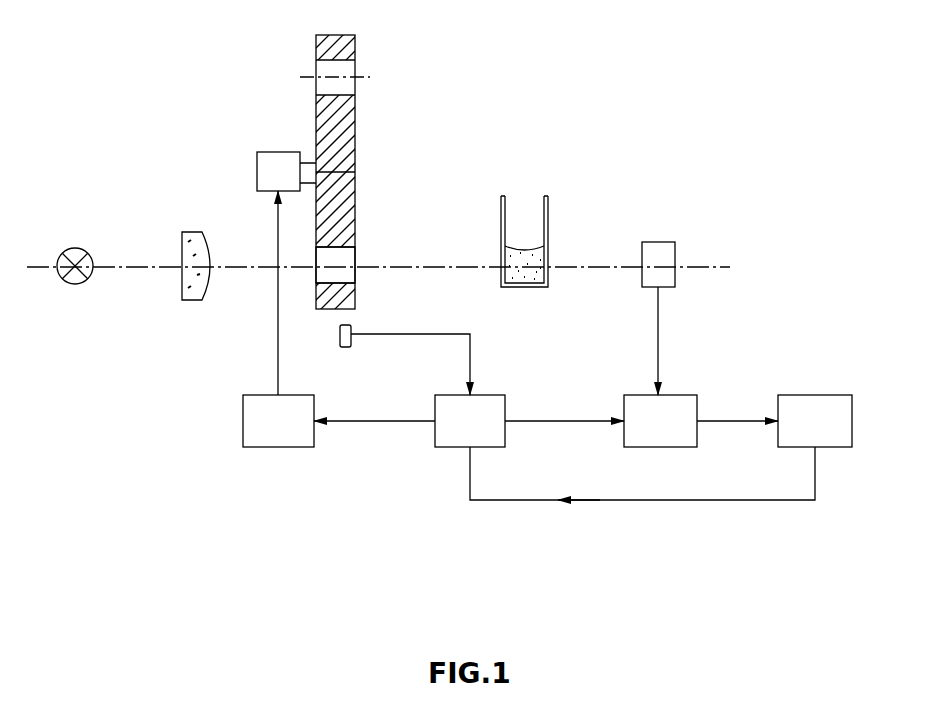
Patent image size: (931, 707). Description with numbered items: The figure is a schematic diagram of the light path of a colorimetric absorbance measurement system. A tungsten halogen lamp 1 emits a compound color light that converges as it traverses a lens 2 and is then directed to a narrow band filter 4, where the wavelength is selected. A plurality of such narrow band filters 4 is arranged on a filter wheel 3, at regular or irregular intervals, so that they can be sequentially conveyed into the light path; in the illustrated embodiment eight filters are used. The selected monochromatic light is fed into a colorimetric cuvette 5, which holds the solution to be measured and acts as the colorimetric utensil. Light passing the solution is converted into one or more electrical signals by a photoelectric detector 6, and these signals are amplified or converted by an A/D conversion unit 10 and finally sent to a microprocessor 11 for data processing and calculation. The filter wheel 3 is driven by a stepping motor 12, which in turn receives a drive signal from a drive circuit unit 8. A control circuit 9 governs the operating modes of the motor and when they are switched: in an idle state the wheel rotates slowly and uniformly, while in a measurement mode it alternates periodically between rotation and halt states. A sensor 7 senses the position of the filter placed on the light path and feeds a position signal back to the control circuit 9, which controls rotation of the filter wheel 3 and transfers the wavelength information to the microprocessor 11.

The tungsten halogen lamp 1 is at (72, 295).
The lens 2 is at (192, 307).
The filter wheel 3 is at (313, 305).
The narrow band filter 4 is at (358, 262).
The colorimetric cuvette 5 is at (523, 293).
The photoelectric detector 6 is at (668, 233).
The sensor 7 is at (342, 352).
The drive circuit unit 8 is at (283, 453).
The control circuit 9 is at (457, 453).
The A/D conversion unit 10 is at (672, 451).
The microprocessor 11 is at (827, 451).
The stepping motor 12 is at (278, 148).